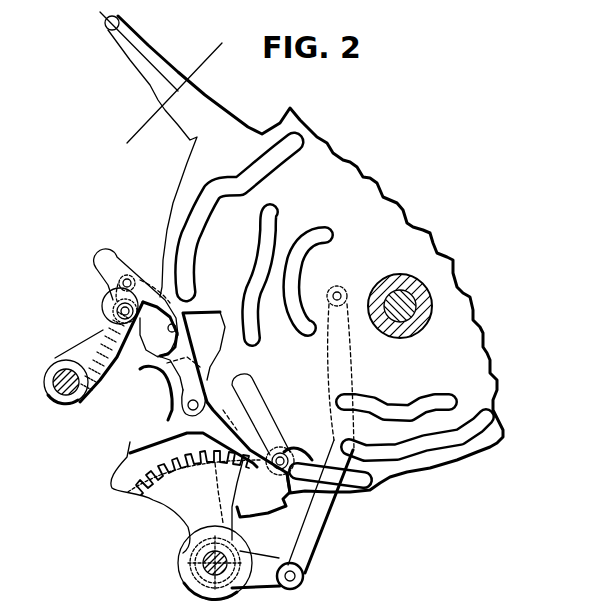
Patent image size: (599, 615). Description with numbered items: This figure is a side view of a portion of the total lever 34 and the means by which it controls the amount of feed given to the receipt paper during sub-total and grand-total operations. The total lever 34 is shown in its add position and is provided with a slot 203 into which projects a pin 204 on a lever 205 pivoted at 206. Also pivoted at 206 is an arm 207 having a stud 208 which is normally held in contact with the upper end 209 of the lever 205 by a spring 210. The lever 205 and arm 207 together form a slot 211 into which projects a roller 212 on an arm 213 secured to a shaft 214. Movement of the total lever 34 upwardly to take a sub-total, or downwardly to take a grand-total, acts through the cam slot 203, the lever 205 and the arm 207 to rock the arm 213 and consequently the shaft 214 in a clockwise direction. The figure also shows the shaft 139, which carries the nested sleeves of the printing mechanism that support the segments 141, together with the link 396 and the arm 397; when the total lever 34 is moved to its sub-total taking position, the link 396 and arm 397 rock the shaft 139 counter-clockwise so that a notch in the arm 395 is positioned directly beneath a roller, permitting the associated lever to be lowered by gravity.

The total lever 34 is at (111, 35).
The arm 207 is at (103, 248).
The stud 208 is at (129, 277).
The upper end of lever 209 is at (118, 284).
The roller 212 is at (121, 312).
The arm 213 is at (100, 337).
The spring 210 is at (119, 352).
The shaft 214 is at (57, 403).
The slot 211 is at (176, 328).
The pivot 206 is at (187, 405).
The lever 205 is at (183, 421).
The pin 204 is at (279, 455).
The slot 203 is at (327, 454).
The arm 395 is at (136, 483).
The segments 141 is at (155, 499).
The shaft 139 is at (209, 569).
The arm 397 is at (287, 540).
The link 396 is at (333, 506).